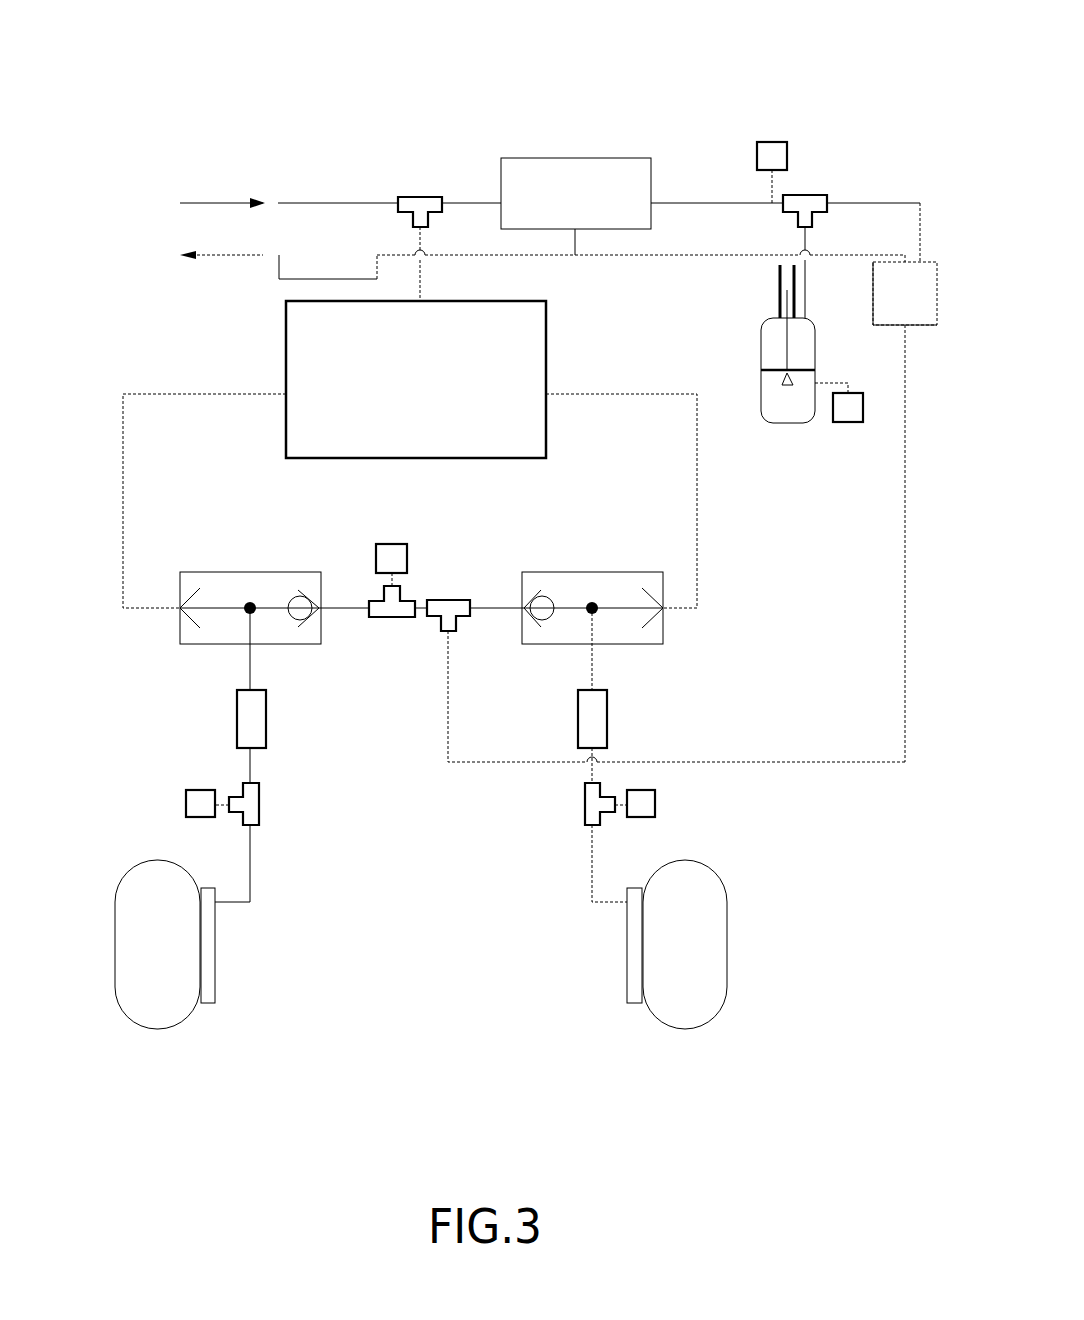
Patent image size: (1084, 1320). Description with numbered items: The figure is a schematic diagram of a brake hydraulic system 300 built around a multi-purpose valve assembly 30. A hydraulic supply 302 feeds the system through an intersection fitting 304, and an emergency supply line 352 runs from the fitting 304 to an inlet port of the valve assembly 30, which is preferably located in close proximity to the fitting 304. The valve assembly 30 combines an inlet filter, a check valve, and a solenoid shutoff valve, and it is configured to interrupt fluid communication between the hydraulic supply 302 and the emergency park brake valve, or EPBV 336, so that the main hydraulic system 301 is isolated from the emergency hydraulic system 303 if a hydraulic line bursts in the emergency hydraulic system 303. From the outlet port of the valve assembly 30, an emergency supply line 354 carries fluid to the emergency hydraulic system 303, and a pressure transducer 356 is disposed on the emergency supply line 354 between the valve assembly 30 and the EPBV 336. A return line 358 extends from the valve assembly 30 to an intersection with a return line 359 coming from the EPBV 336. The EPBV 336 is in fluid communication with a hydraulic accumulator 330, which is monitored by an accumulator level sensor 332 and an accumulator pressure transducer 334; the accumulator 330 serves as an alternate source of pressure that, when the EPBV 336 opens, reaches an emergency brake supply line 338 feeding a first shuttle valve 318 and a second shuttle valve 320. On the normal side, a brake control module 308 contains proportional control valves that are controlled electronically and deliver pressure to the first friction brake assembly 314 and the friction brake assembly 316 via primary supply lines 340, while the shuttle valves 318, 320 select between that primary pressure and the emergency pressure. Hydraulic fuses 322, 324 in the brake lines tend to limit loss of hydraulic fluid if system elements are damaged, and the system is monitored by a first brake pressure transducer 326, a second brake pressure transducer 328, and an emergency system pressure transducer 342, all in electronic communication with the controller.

The brake hydraulic system 300 is at (787, 50).
The main hydraulic system 301 is at (279, 93).
The hydraulic supply 302 is at (228, 205).
The emergency hydraulic system 303 is at (826, 152).
The fitting 304 is at (422, 197).
The valve assembly 30 is at (592, 158).
The brake control module 308 is at (555, 297).
The first friction brake assembly 314 is at (636, 938).
The friction brake assembly 316 is at (215, 946).
The first shuttle valve 318 is at (588, 572).
The second shuttle valve 320 is at (238, 572).
The hydraulic fuse 322 is at (587, 717).
The hydraulic fuse 324 is at (266, 710).
The first brake pressure transducer 326 is at (795, 806).
The second brake pressure transducer 328 is at (95, 773).
The hydraulic accumulator 330 is at (716, 328).
The accumulator level sensor 332 is at (702, 286).
The accumulator pressure transducer 334 is at (845, 488).
The emergency park brake valve (EPBV) 336 is at (883, 312).
The emergency brake supply line 338 is at (905, 388).
The primary supply lines 340 is at (123, 452).
The emergency system pressure transducer 342 is at (407, 558).
The emergency supply line 352 is at (468, 203).
The emergency supply line 354 is at (692, 203).
The pressure transducer 356 is at (820, 84).
The return line 358 is at (577, 237).
The return line 359 is at (862, 250).